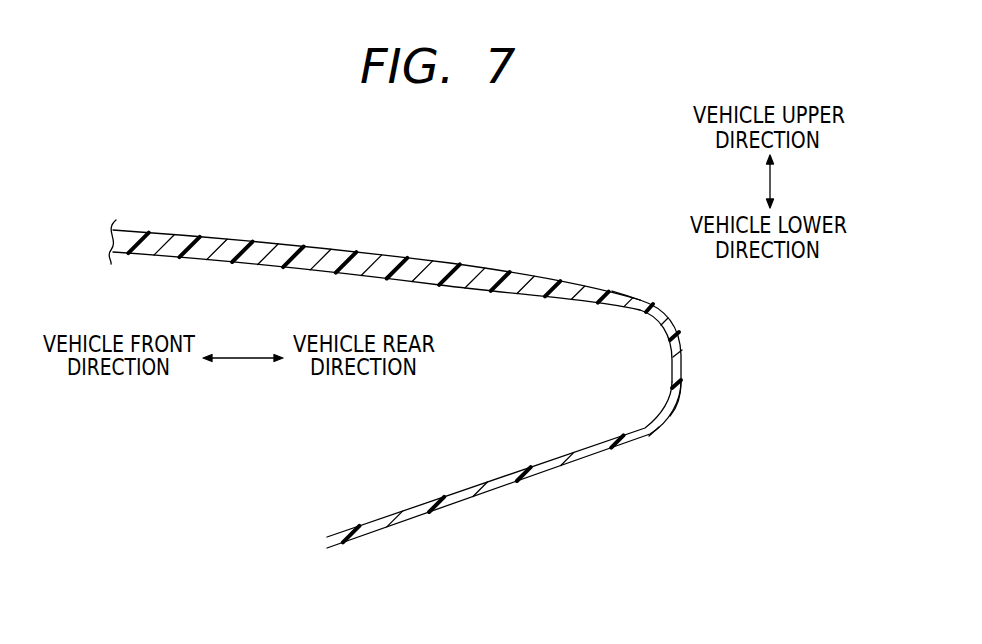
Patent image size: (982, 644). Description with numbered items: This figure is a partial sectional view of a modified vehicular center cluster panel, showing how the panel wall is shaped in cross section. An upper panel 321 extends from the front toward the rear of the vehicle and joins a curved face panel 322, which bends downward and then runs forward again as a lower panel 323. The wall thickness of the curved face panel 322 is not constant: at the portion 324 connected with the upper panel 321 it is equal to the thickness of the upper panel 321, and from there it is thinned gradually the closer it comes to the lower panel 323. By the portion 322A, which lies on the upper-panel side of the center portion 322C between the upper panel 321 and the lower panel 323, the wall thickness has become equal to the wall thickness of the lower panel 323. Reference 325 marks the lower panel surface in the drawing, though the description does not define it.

The upper panel 321 is at (365, 251).
The curved face panel 322 is at (684, 356).
The portion on upper panel side of center portion 322A is at (621, 296).
The center portion 322C is at (683, 386).
The lower panel 323 is at (463, 505).
The portion connected with upper panel 324 is at (538, 277).
The outer surface of lower wall 325 is at (531, 481).